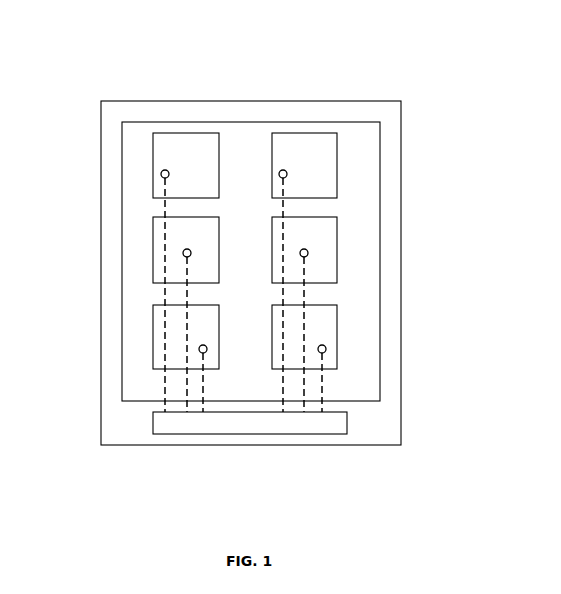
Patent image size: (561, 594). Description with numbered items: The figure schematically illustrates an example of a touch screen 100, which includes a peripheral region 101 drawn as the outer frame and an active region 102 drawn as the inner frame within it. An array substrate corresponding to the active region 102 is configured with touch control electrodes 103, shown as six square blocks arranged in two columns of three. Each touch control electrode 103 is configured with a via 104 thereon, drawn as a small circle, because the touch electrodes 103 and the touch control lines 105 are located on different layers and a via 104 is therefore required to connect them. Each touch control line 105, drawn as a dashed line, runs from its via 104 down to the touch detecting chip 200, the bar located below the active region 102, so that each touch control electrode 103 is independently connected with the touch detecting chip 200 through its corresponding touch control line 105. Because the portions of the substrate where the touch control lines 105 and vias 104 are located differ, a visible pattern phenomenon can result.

The touch screen 100 is at (258, 72).
The peripheral region 101 is at (401, 101).
The active region 102 is at (380, 165).
The touch control electrodes 103 is at (153, 133).
The vias 104 is at (326, 348).
The touch control lines 105 is at (165, 231).
The touch detecting chip 200 is at (250, 433).